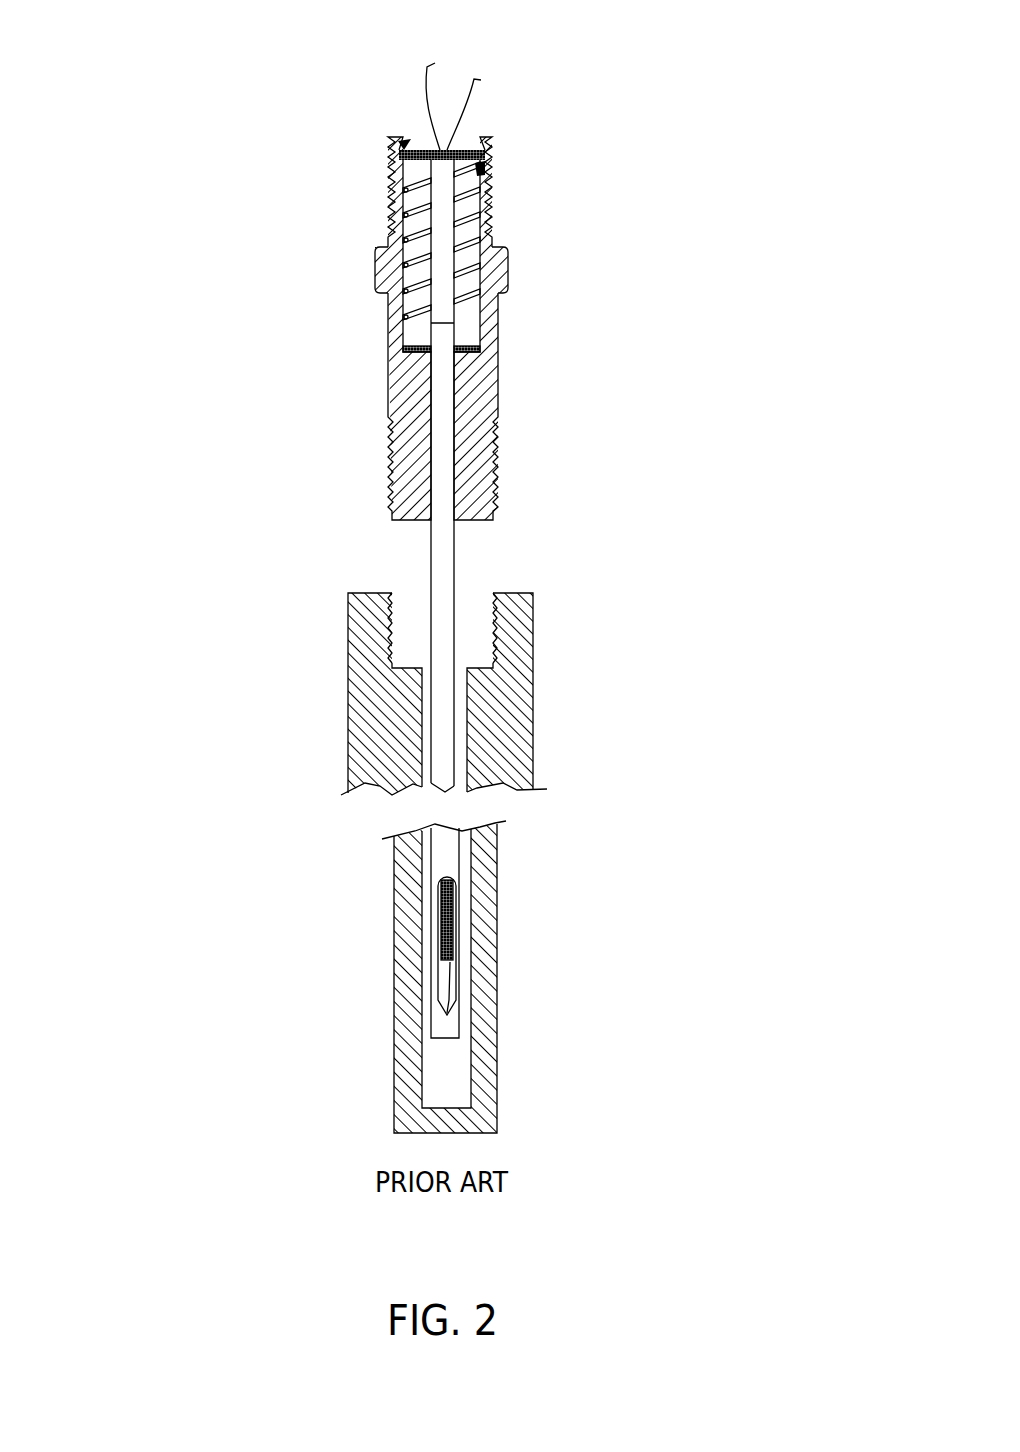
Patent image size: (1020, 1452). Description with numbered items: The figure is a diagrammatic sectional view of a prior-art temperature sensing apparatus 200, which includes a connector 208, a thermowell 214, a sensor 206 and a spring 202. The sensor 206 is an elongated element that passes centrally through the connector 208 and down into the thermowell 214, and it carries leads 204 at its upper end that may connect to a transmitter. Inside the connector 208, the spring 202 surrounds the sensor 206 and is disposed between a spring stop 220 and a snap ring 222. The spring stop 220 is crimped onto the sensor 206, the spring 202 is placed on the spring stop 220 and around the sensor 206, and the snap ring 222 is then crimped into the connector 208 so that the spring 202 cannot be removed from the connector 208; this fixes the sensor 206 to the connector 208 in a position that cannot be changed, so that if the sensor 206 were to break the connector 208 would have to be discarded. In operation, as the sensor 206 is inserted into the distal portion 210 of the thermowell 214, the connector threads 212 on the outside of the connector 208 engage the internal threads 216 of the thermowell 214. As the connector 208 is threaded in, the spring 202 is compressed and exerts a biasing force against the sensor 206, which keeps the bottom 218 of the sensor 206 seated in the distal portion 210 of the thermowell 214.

The temperature sensing apparatus 200 is at (237, 98).
The spring 202 is at (470, 176).
The leads 204 is at (413, 92).
The sensor 206 is at (432, 545).
The connector 208 is at (503, 320).
The distal portion 210 is at (435, 1108).
The connector threads 212 is at (380, 440).
The thermowell 214 is at (348, 670).
The internal threads 216 is at (478, 643).
The bottom 218 is at (447, 1040).
The spring stop 220 is at (418, 353).
The snap ring 222 is at (405, 145).